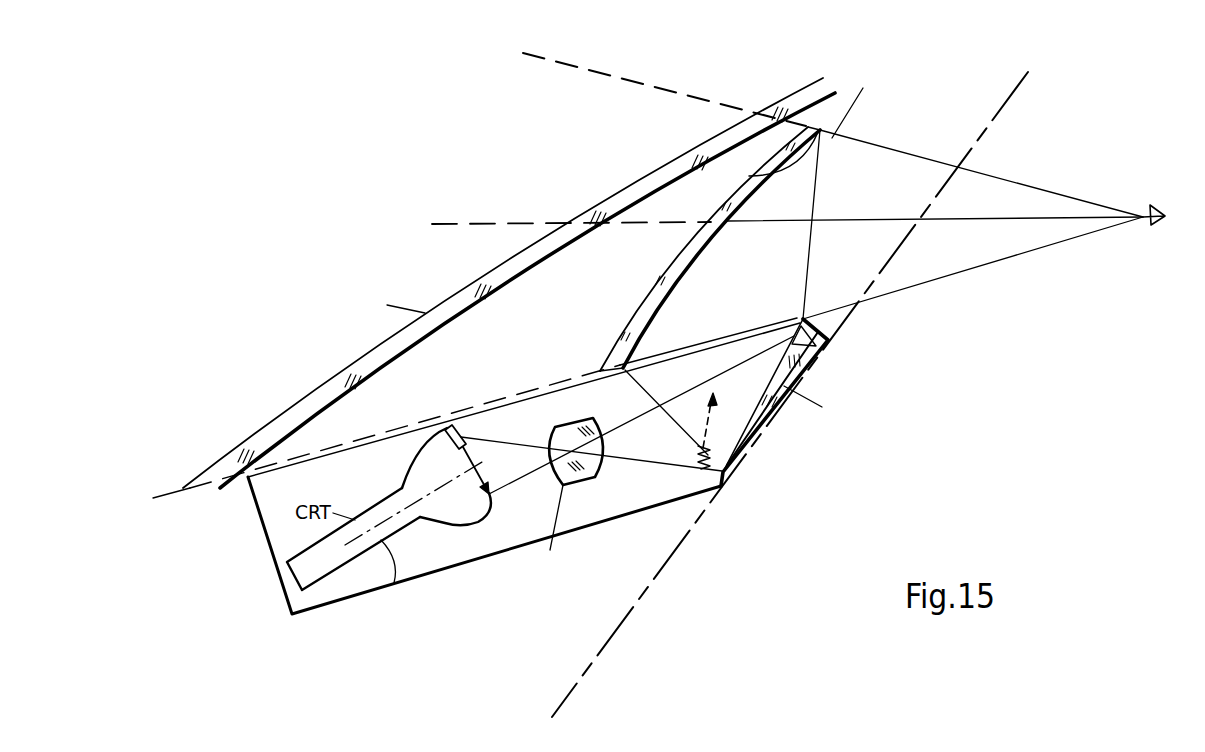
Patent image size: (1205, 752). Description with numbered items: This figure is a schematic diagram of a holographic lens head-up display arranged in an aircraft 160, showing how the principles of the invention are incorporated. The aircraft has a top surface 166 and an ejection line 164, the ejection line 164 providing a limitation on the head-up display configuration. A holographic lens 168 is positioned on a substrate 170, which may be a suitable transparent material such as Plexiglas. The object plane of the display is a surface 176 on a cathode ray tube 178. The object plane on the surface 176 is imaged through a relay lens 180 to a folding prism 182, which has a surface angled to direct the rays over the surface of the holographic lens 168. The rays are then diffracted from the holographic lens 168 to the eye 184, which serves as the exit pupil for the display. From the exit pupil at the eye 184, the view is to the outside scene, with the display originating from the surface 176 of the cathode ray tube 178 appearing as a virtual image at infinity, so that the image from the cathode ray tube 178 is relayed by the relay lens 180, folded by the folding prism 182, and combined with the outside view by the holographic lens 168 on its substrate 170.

The aircraft 160 is at (245, 443).
The ejection line 164 is at (632, 612).
The top surface 166 is at (367, 442).
The holographic lens 168 is at (660, 292).
The substrate 170 is at (648, 289).
The surface 176 is at (483, 459).
The cathode ray tube 178 is at (394, 575).
The relay lens 180 is at (590, 478).
The folding prism 182 is at (738, 454).
The eye 184 is at (1145, 211).